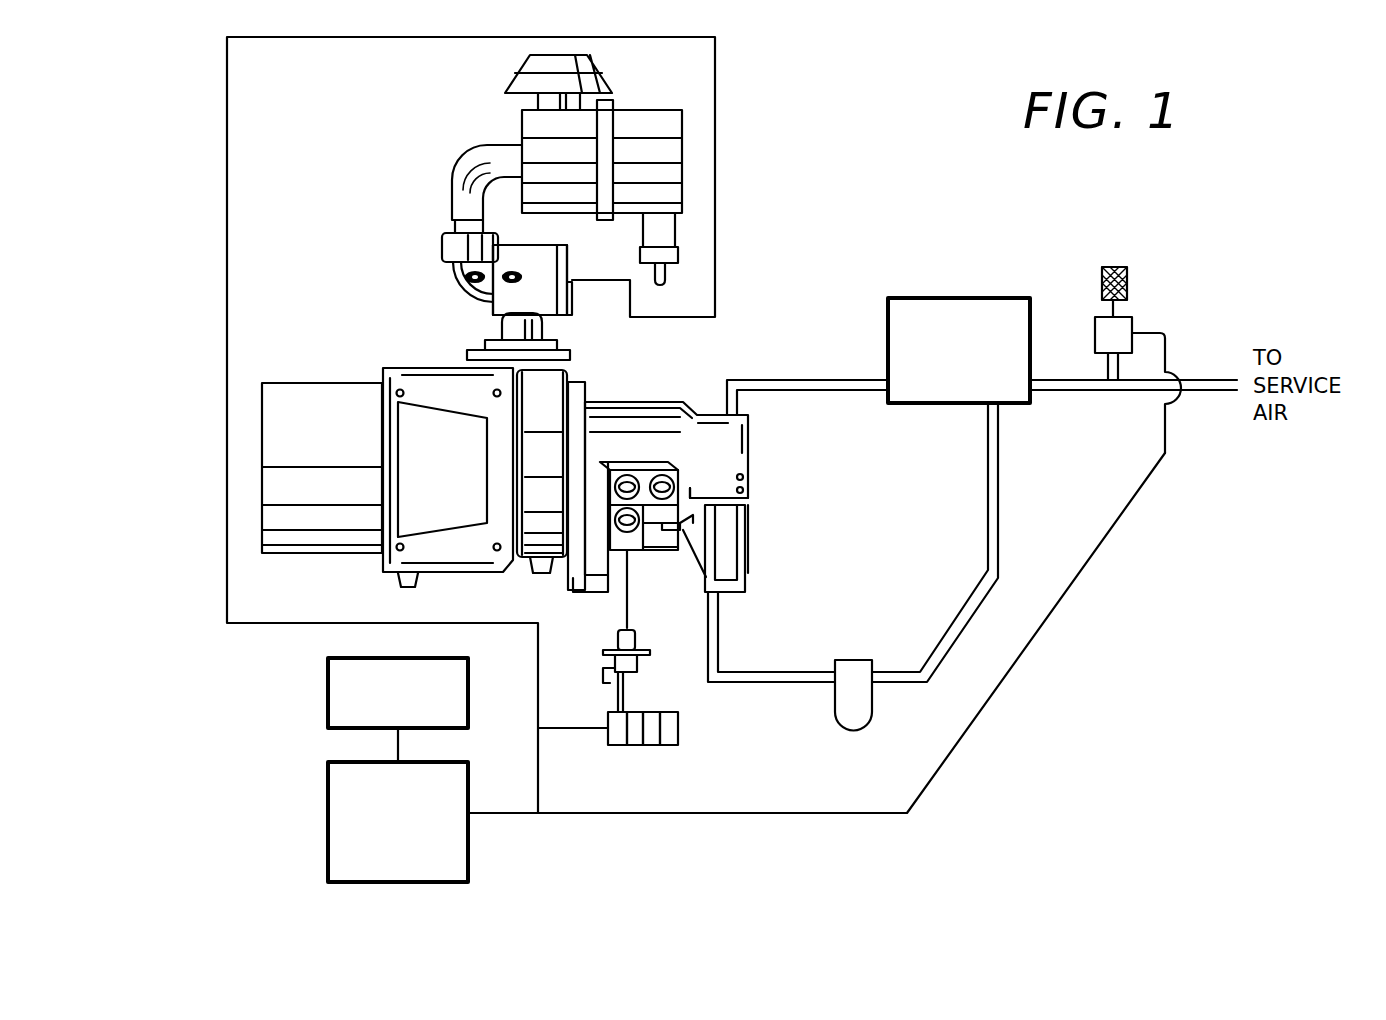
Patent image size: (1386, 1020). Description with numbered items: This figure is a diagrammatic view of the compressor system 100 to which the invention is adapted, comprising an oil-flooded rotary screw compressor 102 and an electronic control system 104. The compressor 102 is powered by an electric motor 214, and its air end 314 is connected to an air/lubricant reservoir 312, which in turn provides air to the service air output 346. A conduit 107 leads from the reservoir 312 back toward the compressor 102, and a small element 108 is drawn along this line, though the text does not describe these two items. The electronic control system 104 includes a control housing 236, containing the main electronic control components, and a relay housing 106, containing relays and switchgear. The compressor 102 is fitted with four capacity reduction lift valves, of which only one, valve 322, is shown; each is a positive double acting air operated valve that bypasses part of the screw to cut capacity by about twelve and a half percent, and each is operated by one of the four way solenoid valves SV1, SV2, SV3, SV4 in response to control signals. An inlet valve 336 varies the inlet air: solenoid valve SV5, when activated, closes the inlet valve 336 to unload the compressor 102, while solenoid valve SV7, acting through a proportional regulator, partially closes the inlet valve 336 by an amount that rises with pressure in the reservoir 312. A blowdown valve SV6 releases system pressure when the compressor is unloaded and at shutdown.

The compressor system 100 is at (1012, 702).
The rotary screw compressor 102 is at (763, 445).
The electronic control system 104 is at (360, 782).
The relay housing 106 is at (470, 848).
The conduit 107 is at (942, 643).
The drain filter 108 is at (850, 712).
The electric motor 214 is at (262, 512).
The control housing 236 is at (328, 680).
The air/lubricant reservoir 312 is at (958, 323).
The air end 314 is at (712, 417).
The capacity reduction lift valve 322 is at (605, 655).
The inlet valve 336 is at (442, 250).
The service air output 346 is at (1232, 393).
The four way solenoid valve SV1 is at (607, 737).
The four way solenoid valve SV2 is at (633, 747).
The four way solenoid valve SV3 is at (650, 747).
The four way solenoid valve SV4 is at (667, 747).
The solenoid valve SV5 is at (572, 290).
The blowdown valve SV6 is at (1127, 327).
The solenoid valve SV7 is at (572, 296).